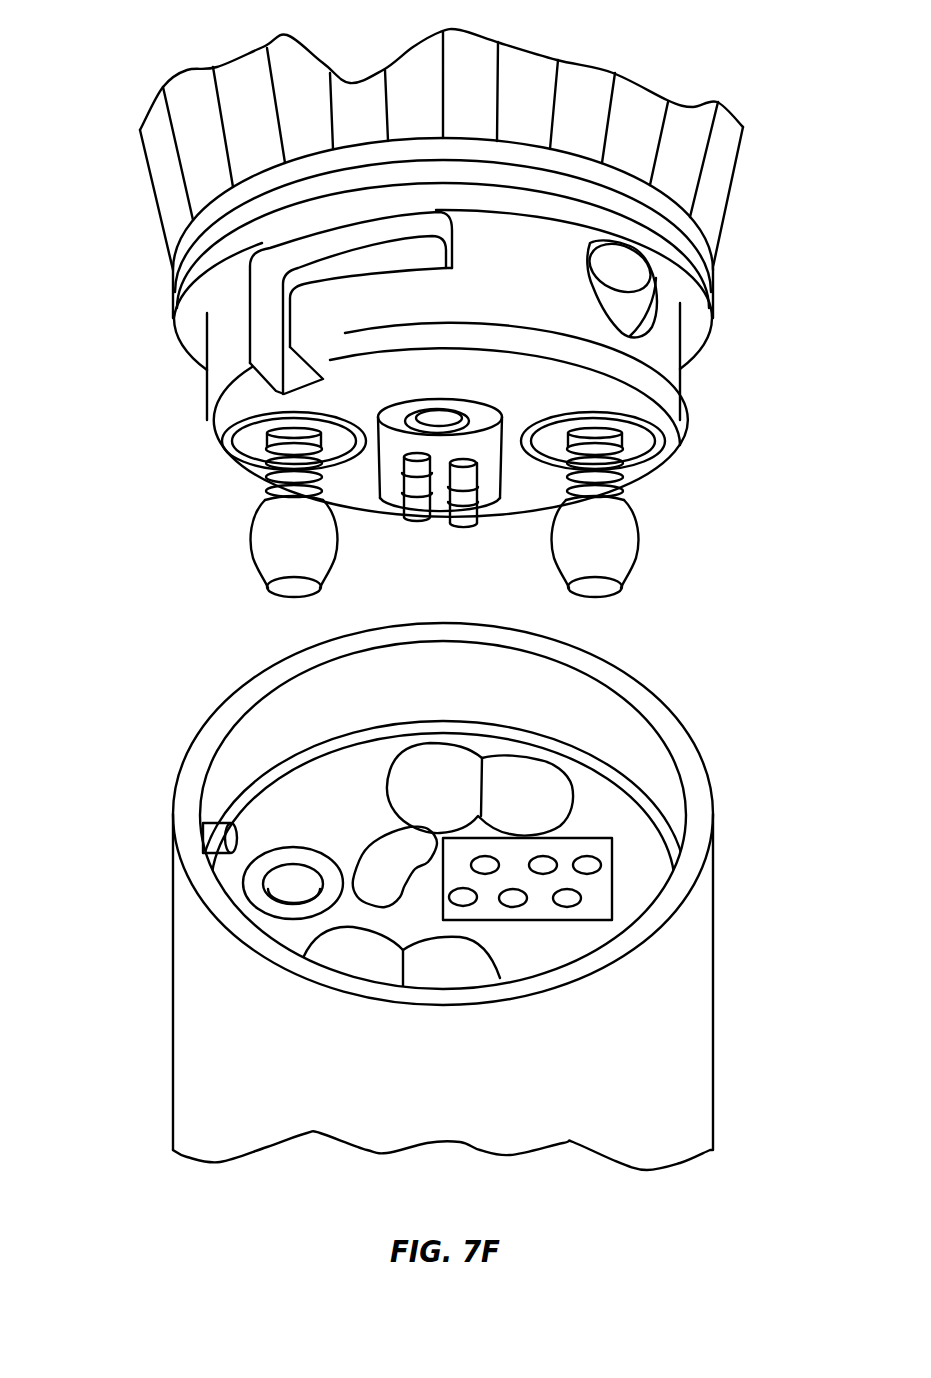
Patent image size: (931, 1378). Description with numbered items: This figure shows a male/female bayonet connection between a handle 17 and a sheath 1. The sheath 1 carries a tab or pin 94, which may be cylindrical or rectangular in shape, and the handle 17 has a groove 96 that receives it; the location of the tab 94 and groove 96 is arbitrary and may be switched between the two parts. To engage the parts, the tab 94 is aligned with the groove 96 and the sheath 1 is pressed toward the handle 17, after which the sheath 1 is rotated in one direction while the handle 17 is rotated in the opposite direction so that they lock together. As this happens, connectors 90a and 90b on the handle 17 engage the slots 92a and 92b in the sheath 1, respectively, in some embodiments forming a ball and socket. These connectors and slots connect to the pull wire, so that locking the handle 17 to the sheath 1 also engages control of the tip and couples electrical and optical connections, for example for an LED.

The handle 17 is at (732, 192).
The groove 96 is at (265, 340).
The connector 90a is at (250, 540).
The connector 90b is at (637, 535).
The sheath 1 is at (713, 1018).
The slot 92a is at (550, 778).
The slot 92b is at (330, 930).
The tab 94 is at (216, 832).